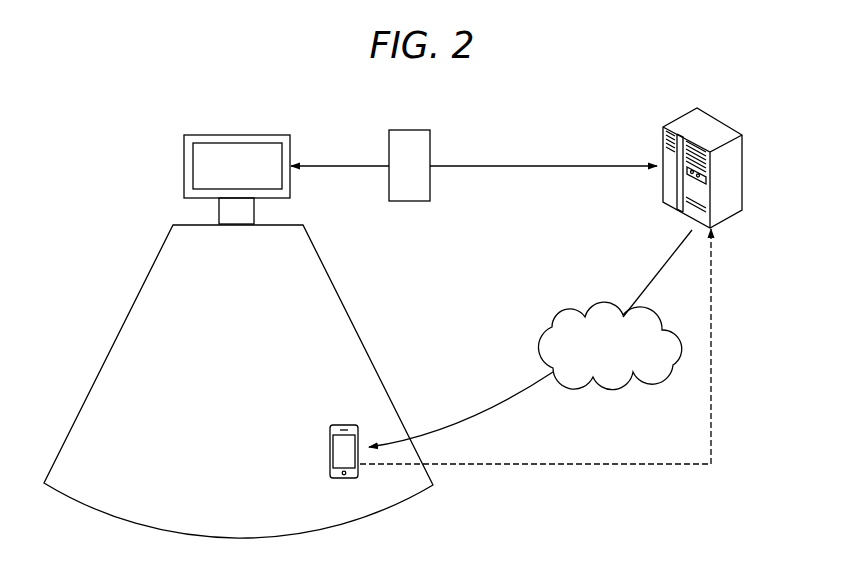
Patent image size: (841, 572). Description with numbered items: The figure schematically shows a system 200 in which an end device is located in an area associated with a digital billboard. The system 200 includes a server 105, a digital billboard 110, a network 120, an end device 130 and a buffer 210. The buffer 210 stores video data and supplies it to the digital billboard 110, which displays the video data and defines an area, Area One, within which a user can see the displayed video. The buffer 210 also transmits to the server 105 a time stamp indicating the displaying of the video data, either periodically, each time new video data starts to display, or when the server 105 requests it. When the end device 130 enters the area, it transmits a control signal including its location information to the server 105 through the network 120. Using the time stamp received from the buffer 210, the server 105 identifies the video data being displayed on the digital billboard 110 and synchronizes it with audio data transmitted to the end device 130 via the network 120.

The system 200 is at (748, 69).
The digital billboard 110 is at (184, 166).
The buffer 210 is at (406, 130).
The server 105 is at (743, 177).
The network 120 is at (633, 374).
The end device 130 is at (328, 450).